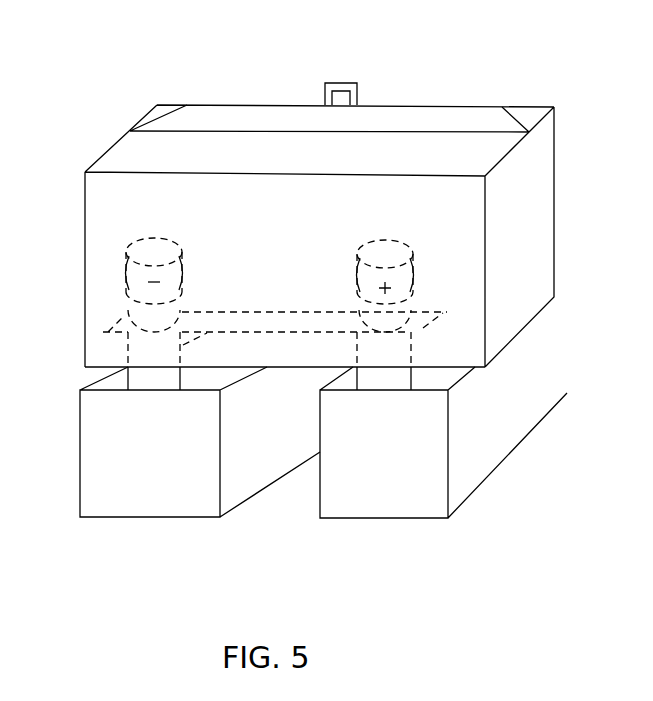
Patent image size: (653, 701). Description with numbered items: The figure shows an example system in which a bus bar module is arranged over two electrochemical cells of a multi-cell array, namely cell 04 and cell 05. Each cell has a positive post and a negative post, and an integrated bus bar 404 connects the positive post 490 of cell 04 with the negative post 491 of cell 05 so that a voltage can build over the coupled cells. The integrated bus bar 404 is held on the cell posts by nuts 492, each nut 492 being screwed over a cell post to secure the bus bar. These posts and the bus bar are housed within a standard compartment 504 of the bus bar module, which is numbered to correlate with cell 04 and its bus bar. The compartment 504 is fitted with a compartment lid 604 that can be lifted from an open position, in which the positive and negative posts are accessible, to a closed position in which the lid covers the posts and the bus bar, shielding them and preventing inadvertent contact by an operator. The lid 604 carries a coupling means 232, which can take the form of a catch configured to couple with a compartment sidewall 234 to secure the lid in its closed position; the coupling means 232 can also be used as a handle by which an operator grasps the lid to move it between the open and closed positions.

The standard compartment 504 is at (542, 172).
The compartment lid 604 is at (242, 112).
The coupling means 232 is at (355, 83).
The compartment sidewall 234 is at (95, 355).
The negative post 491 is at (135, 243).
The positive post 490 is at (393, 262).
The nut 492 is at (137, 315).
The integrated bus bar 404 is at (110, 322).
The electrochemical cell 05 is at (128, 488).
The electrochemical cell 04 is at (388, 497).